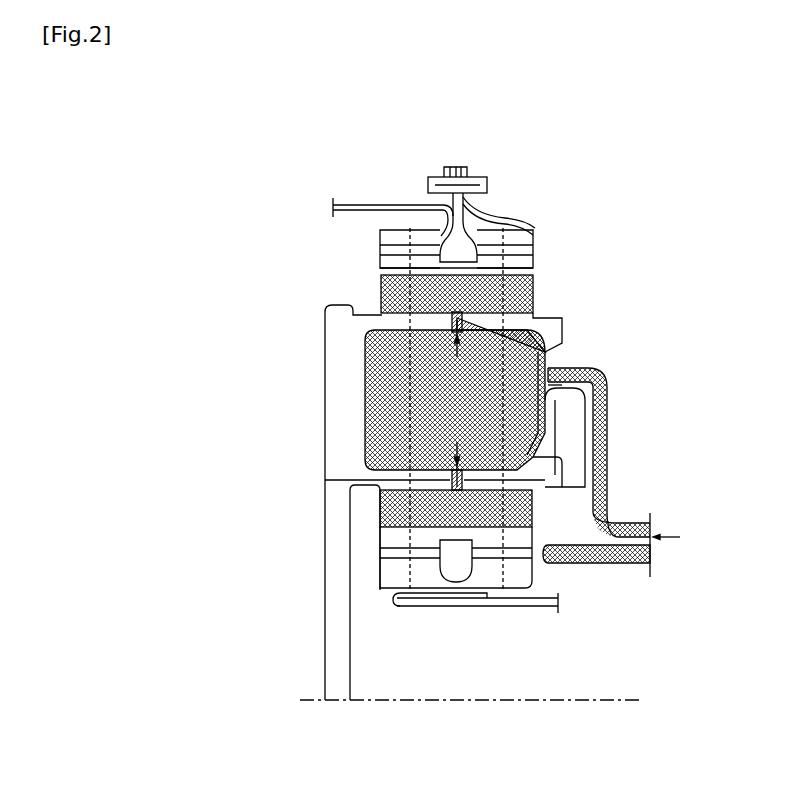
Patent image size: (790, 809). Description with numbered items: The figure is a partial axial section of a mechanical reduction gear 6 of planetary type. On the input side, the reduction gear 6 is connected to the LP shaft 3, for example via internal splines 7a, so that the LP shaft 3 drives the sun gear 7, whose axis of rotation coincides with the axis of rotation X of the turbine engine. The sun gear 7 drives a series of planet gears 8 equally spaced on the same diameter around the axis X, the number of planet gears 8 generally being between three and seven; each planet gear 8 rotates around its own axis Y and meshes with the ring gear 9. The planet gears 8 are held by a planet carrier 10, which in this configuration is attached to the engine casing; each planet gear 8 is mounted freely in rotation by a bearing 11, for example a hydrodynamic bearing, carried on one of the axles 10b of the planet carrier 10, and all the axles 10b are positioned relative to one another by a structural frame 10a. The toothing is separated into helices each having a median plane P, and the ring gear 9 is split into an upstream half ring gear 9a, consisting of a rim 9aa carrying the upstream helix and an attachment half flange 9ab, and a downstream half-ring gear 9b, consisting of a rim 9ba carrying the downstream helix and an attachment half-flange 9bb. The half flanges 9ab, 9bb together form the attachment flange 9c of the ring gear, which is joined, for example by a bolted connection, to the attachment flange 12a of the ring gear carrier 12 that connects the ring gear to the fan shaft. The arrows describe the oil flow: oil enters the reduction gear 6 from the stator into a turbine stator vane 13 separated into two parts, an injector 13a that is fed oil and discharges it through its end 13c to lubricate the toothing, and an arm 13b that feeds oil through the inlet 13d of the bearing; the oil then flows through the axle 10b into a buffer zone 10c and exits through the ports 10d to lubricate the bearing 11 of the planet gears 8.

The LP shaft 3 is at (542, 608).
The reduction gear 6 is at (622, 279).
The sun gear 7 is at (380, 570).
The internal splines 7a is at (444, 604).
The planet gears 8 is at (380, 542).
The ring gear 9 is at (538, 226).
The upstream half ring gear 9a is at (393, 233).
The rim 9aa is at (402, 228).
The attachment half flange 9ab is at (456, 168).
The downstream half-ring gear 9b is at (524, 238).
The rim 9ba is at (505, 218).
The attachment half-flange 9bb is at (466, 170).
The attachment flange of the ring gear 9c is at (400, 121).
The planet carrier 10 is at (555, 326).
The structural frame 10a is at (327, 371).
The axles 10b is at (595, 468).
The buffer zone 10c is at (455, 400).
The ports 10d is at (552, 337).
The bearing 11 is at (537, 297).
The ring gear carrier 12 is at (357, 204).
The attachment flange of the ring gear carrier 12a is at (442, 175).
The turbine stator vane 13 is at (652, 497).
The injector 13a is at (614, 565).
The arm 13b is at (606, 430).
The end 13c is at (548, 560).
The inlet of the bearing 13d is at (560, 368).
The median plane P is at (400, 584).
The axis of rotation of the turbine engine X is at (642, 700).
The axis of the planet gear Y is at (562, 385).